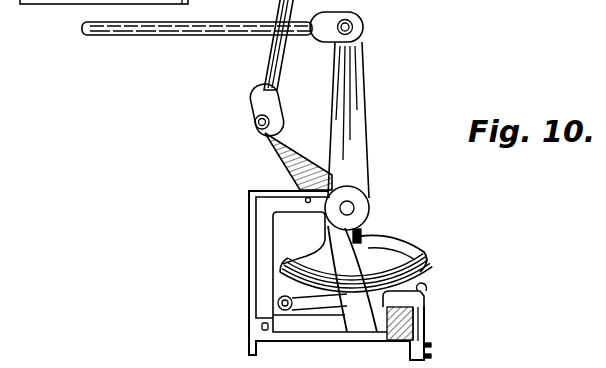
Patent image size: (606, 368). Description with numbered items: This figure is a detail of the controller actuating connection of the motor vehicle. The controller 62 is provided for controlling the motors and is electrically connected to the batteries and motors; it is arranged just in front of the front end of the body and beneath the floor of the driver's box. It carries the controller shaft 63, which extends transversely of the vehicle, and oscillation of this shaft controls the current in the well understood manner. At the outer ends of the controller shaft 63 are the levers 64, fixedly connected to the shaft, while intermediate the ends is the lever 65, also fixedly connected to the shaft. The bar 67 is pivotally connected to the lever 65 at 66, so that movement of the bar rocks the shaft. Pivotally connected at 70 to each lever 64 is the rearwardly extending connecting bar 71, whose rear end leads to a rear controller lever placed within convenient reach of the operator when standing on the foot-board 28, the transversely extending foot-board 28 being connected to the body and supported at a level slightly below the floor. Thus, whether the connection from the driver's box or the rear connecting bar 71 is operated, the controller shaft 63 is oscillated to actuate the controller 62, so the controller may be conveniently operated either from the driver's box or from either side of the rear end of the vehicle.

The foot-board 28 is at (41, 4).
The connecting bar 71 is at (184, 35).
The pivotal connection 70 is at (353, 22).
The bar 67 is at (268, 58).
The pivotal connection 66 is at (257, 128).
The lever 65 is at (293, 150).
The lever 64 is at (339, 105).
The controller shaft 63 is at (356, 208).
The controller 62 is at (253, 256).